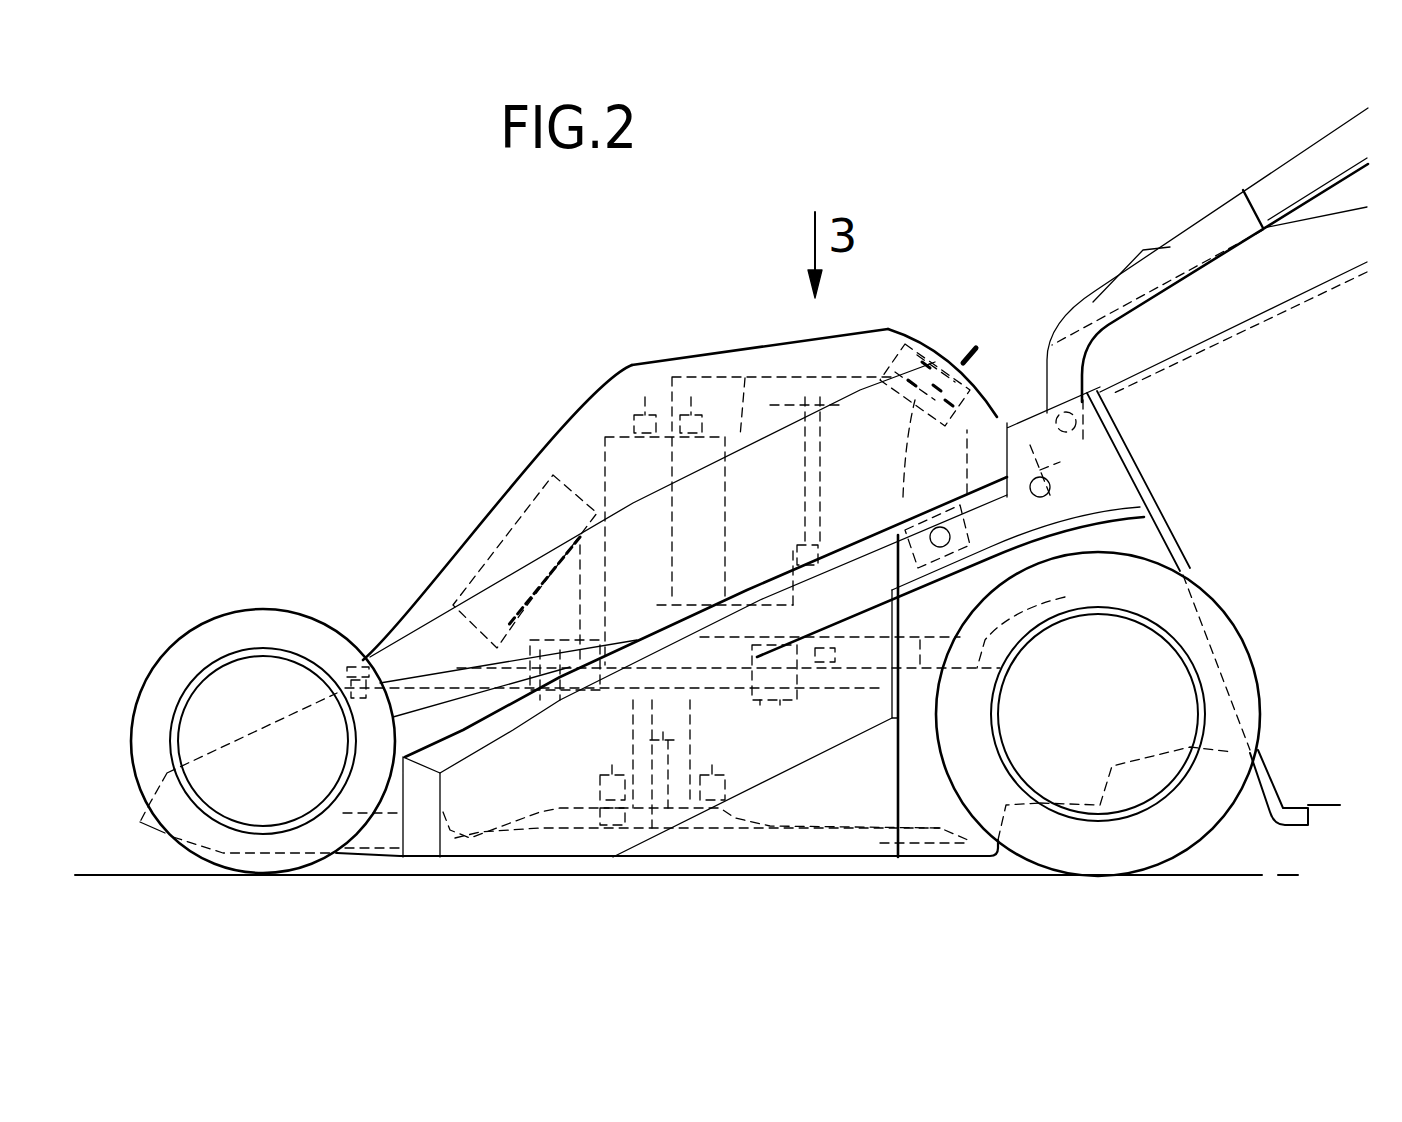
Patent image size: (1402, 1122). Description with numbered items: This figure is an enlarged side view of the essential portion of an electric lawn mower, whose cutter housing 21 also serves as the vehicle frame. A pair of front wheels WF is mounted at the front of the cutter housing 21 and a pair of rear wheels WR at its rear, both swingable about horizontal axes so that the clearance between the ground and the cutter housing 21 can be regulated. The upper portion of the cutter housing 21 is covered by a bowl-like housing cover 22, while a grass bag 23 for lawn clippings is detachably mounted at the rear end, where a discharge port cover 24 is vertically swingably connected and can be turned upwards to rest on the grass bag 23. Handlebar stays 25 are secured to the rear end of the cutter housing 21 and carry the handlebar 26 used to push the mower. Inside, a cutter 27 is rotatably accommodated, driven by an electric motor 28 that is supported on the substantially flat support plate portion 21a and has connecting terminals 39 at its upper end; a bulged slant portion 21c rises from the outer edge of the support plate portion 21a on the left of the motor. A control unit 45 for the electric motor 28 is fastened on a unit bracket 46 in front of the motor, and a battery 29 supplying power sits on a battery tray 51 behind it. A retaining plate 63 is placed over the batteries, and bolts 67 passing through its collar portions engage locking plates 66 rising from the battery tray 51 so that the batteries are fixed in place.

The cutter housing 21 is at (860, 796).
The support plate portion 21a is at (1043, 612).
The bulged slant portion 21c is at (763, 582).
The housing cover 22 is at (608, 410).
The grass bag 23 is at (1337, 482).
The discharge port cover 24 is at (1243, 272).
The handlebar stays 25 is at (1098, 315).
The handlebar 26 is at (1302, 168).
The cutter 27 is at (543, 825).
The electric motor 28 is at (603, 463).
The battery 29 is at (745, 378).
The connecting terminals 39 is at (690, 405).
The control unit 45 is at (480, 517).
The unit bracket 46 is at (520, 607).
The battery tray 51 is at (687, 593).
The retaining plate 63 is at (848, 352).
The locking plates 66 is at (688, 609).
The bolts 67 is at (815, 478).
The front wheels WF is at (243, 632).
The rear wheels WR is at (1245, 652).